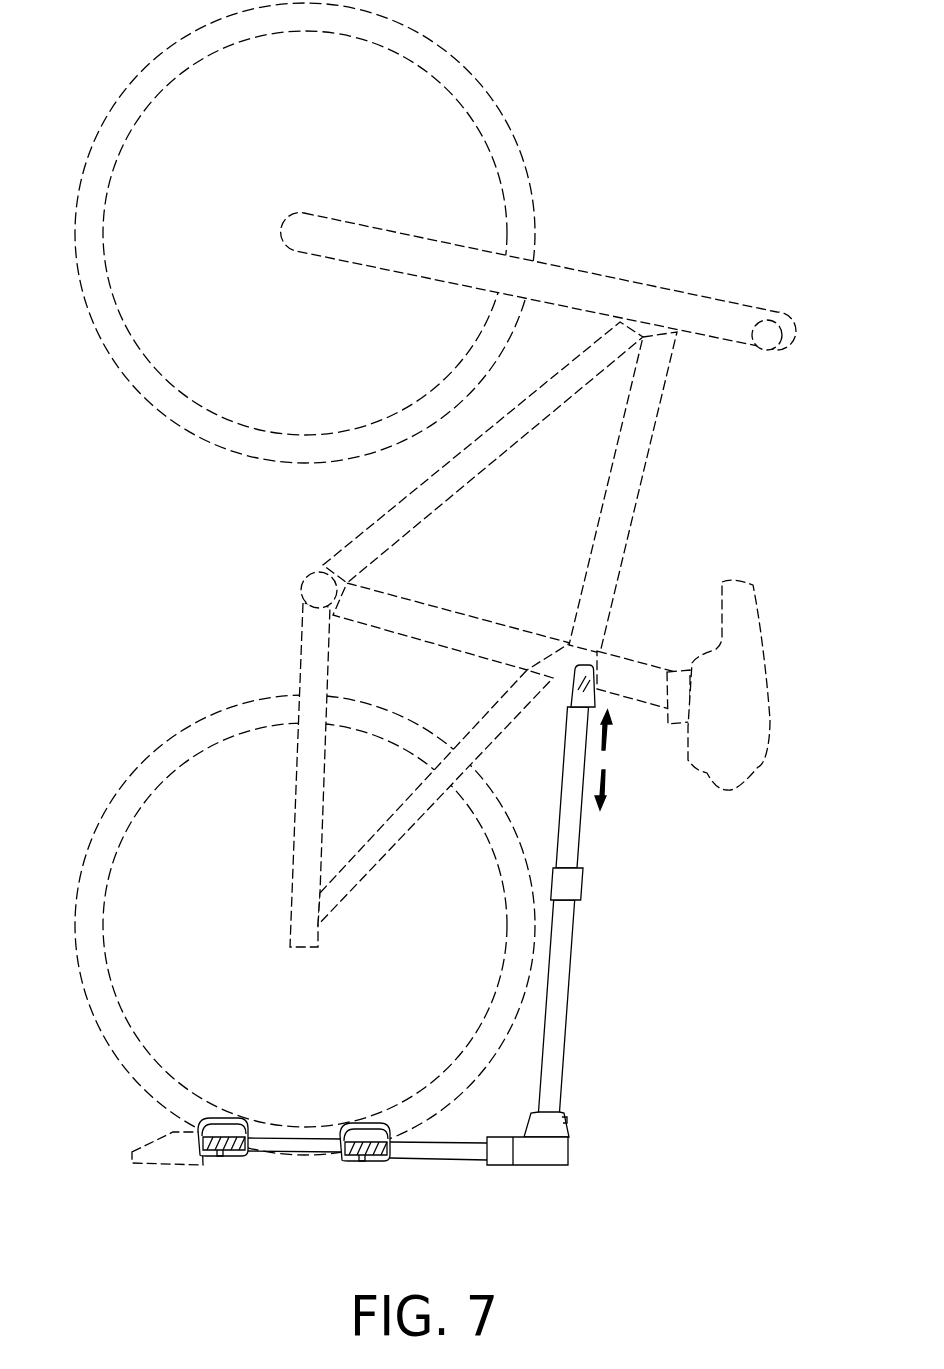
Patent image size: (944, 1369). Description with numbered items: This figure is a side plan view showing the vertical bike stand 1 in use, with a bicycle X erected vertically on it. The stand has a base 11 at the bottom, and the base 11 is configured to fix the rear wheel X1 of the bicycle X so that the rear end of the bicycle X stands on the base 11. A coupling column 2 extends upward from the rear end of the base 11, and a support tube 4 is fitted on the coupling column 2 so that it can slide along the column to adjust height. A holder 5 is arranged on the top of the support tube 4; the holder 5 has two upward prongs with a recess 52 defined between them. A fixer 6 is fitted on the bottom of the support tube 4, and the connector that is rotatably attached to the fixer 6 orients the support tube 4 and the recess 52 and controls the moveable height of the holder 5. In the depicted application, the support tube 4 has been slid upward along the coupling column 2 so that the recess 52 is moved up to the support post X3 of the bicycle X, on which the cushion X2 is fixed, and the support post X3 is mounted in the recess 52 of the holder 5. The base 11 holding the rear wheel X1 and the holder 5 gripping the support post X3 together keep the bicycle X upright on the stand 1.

The vertical bike stand 1 is at (438, 862).
The base 11 is at (418, 1152).
The coupling column 2 is at (560, 958).
The support tube 4 is at (573, 843).
The holder 5 is at (641, 606).
The recess 52 is at (590, 666).
The fixer 6 is at (563, 885).
The bicycle X is at (451, 579).
The rear wheel X1 is at (253, 709).
The cushion X2 is at (750, 663).
The support post X3 is at (641, 693).